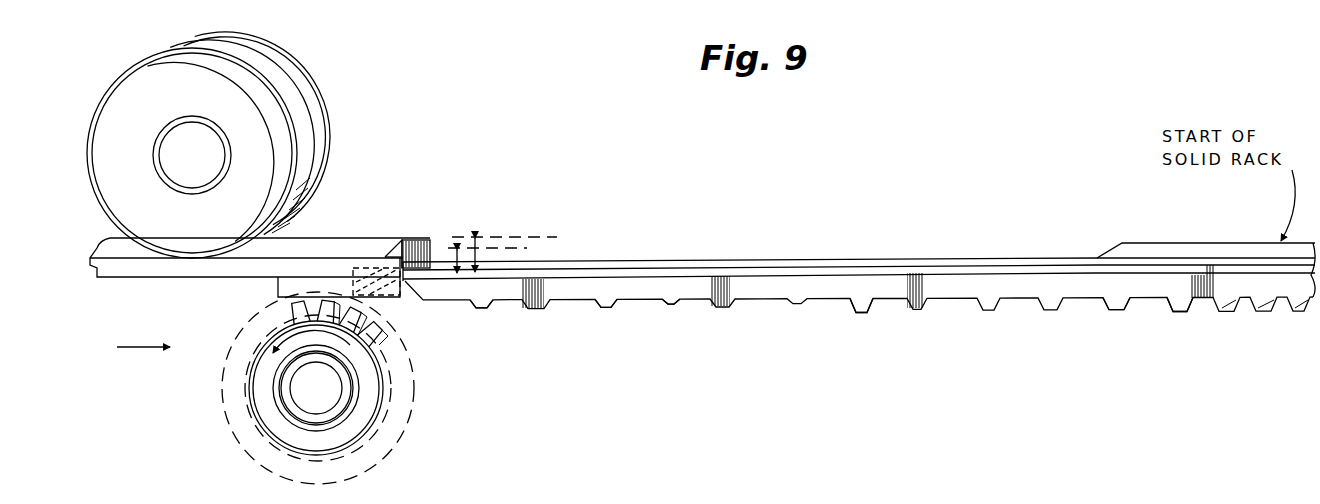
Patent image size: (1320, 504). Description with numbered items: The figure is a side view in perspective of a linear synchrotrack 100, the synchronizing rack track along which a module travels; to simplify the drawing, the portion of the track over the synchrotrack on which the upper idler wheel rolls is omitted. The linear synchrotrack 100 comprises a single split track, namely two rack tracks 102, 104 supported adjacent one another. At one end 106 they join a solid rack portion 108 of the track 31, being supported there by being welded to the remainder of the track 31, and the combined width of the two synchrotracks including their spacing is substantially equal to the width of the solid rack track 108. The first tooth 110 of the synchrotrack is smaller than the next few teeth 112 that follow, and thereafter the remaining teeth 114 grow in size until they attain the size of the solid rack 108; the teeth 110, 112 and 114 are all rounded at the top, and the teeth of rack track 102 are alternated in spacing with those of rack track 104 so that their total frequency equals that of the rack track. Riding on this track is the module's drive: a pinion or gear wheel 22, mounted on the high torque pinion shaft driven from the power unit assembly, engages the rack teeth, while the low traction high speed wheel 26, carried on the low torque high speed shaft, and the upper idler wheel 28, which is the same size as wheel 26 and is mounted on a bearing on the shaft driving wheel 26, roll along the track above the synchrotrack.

The pinion or gear wheel 22 is at (413, 410).
The low traction high speed wheel 26 is at (306, 69).
The upper idler wheel 28 is at (120, 79).
The track 31 is at (1248, 243).
The linear synchrotrack 100 is at (789, 246).
The rack track 102 is at (650, 273).
The rack track 104 is at (680, 260).
The one end 106 is at (1150, 299).
The solid rack portion 108 is at (1212, 313).
The first tooth 110 is at (421, 308).
The next few teeth 112 is at (489, 308).
The remaining teeth 114 is at (871, 301).